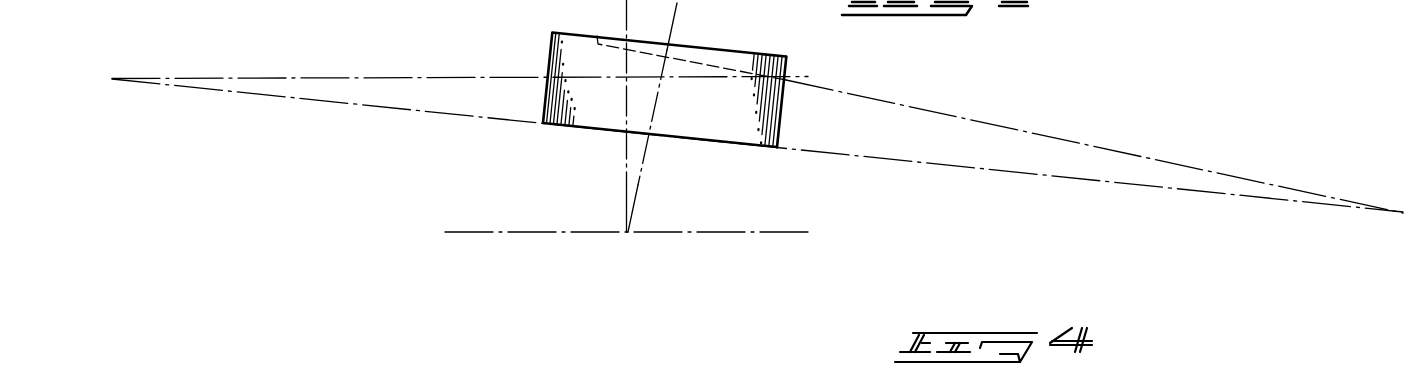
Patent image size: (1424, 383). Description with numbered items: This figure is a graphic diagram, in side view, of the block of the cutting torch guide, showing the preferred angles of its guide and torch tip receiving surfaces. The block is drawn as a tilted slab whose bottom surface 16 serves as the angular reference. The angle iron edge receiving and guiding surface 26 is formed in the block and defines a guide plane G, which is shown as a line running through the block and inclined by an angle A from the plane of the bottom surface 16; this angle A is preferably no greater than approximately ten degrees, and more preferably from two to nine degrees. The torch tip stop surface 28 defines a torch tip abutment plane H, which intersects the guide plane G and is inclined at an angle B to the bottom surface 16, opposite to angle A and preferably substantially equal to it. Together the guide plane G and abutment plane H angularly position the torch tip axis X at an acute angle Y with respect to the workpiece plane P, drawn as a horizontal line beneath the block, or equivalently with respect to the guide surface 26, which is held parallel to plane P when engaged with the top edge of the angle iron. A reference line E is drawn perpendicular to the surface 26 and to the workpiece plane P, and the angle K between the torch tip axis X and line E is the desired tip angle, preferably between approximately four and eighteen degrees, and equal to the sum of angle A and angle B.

The bottom surface 16 is at (742, 146).
The angle iron edge receiving and guiding surface 26 is at (786, 78).
The torch tip stop surface 28 is at (637, 47).
The angle A is at (197, 113).
The angle B is at (1312, 230).
The guide plane G is at (456, 76).
The torch tip abutment plane H is at (898, 106).
The torch tip axis X is at (678, 10).
The angle K is at (682, 164).
The reference line E is at (638, 196).
The angle Y is at (666, 231).
The workpiece plane P is at (571, 233).